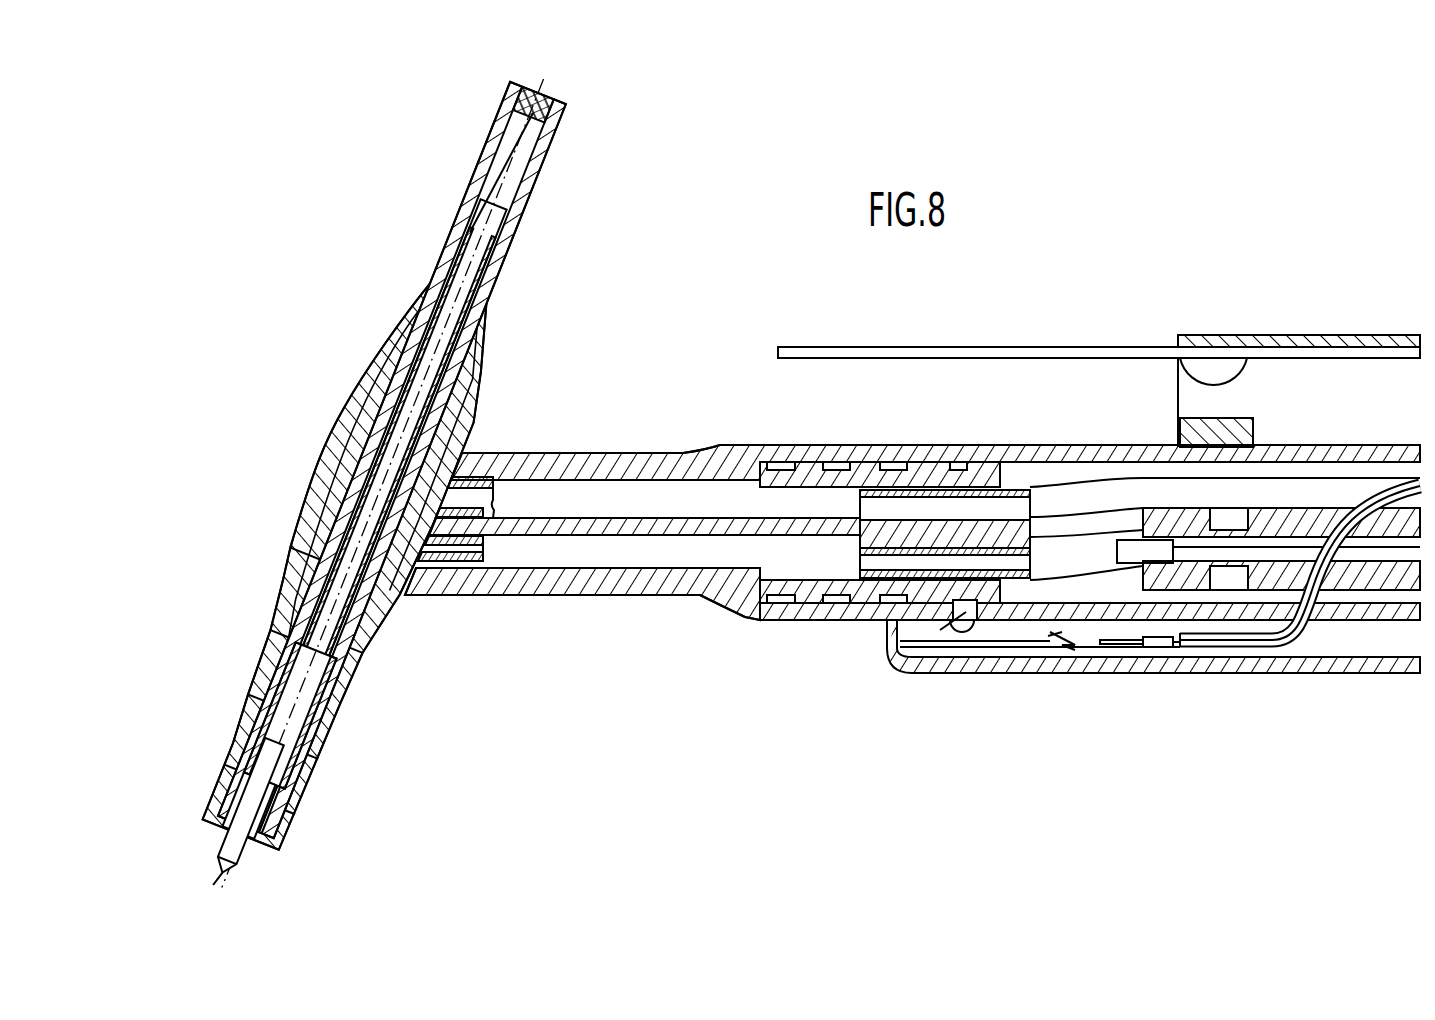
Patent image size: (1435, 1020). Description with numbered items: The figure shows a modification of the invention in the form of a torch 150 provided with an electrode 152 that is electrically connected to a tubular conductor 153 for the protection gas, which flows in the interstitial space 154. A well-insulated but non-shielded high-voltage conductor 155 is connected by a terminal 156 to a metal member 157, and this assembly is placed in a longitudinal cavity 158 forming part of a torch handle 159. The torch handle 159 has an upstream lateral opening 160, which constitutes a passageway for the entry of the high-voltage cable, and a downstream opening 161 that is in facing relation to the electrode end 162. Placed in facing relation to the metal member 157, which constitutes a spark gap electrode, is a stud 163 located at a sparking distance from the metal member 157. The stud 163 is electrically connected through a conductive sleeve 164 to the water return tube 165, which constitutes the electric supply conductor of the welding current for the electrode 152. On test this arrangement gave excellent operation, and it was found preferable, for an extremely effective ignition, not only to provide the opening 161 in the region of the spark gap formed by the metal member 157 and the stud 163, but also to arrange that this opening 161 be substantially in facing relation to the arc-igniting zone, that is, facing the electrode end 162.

The torch 150 is at (327, 375).
The electrode 152 is at (313, 626).
The tubular conductor 153 is at (470, 497).
The interstitial space 154 is at (369, 640).
The high-voltage conductor 155 is at (1252, 650).
The terminal 156 is at (1137, 650).
The metal member 157 is at (1012, 652).
The longitudinal cavity 158 is at (1060, 642).
The torch handle 159 is at (990, 683).
The upstream lateral opening 160 is at (1318, 618).
The downstream opening 161 is at (872, 636).
The electrode end 162 is at (237, 873).
The stud 163 is at (951, 622).
The conductive sleeve 164 is at (945, 468).
The water return tube 165 is at (640, 550).